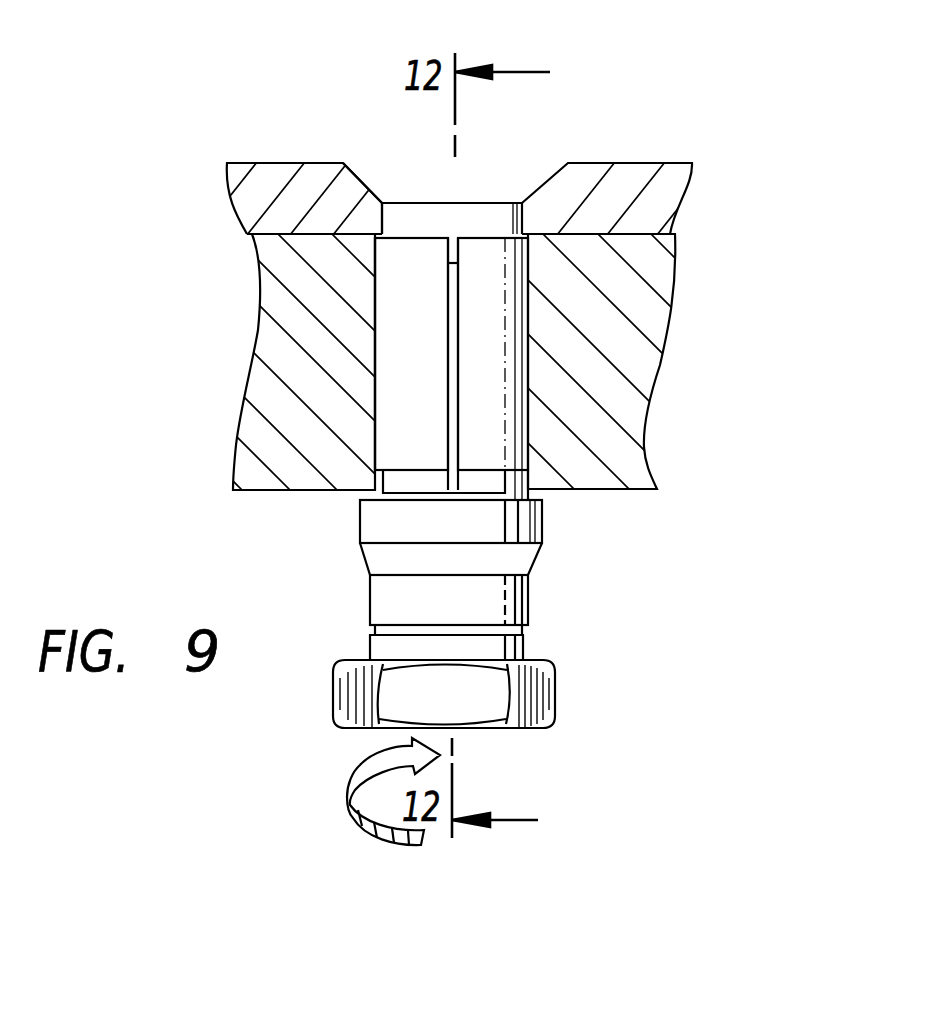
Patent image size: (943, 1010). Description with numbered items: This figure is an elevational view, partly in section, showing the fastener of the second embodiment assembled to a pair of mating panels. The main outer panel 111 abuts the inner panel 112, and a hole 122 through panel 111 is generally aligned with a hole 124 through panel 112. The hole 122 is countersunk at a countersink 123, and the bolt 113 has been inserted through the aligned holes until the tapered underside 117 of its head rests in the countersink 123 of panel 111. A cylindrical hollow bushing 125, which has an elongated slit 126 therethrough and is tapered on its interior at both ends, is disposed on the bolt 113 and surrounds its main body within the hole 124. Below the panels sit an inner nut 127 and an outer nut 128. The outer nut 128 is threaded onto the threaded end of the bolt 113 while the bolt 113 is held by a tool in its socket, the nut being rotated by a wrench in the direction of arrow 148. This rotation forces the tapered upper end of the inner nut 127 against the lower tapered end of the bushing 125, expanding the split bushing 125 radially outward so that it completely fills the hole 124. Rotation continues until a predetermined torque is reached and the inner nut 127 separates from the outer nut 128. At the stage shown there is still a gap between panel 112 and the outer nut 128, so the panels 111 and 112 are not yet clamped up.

The panel 111 is at (645, 185).
The panel 112 is at (610, 382).
The bolt 113 is at (482, 163).
The underside 117 is at (470, 180).
The hole 122 is at (385, 218).
The countersink 123 is at (382, 200).
The hole 124 is at (375, 307).
The bushing 125 is at (370, 336).
The slit 126 is at (445, 403).
The inner nut 127 is at (417, 482).
The outer nut 128 is at (522, 650).
The arrow 148 is at (360, 765).